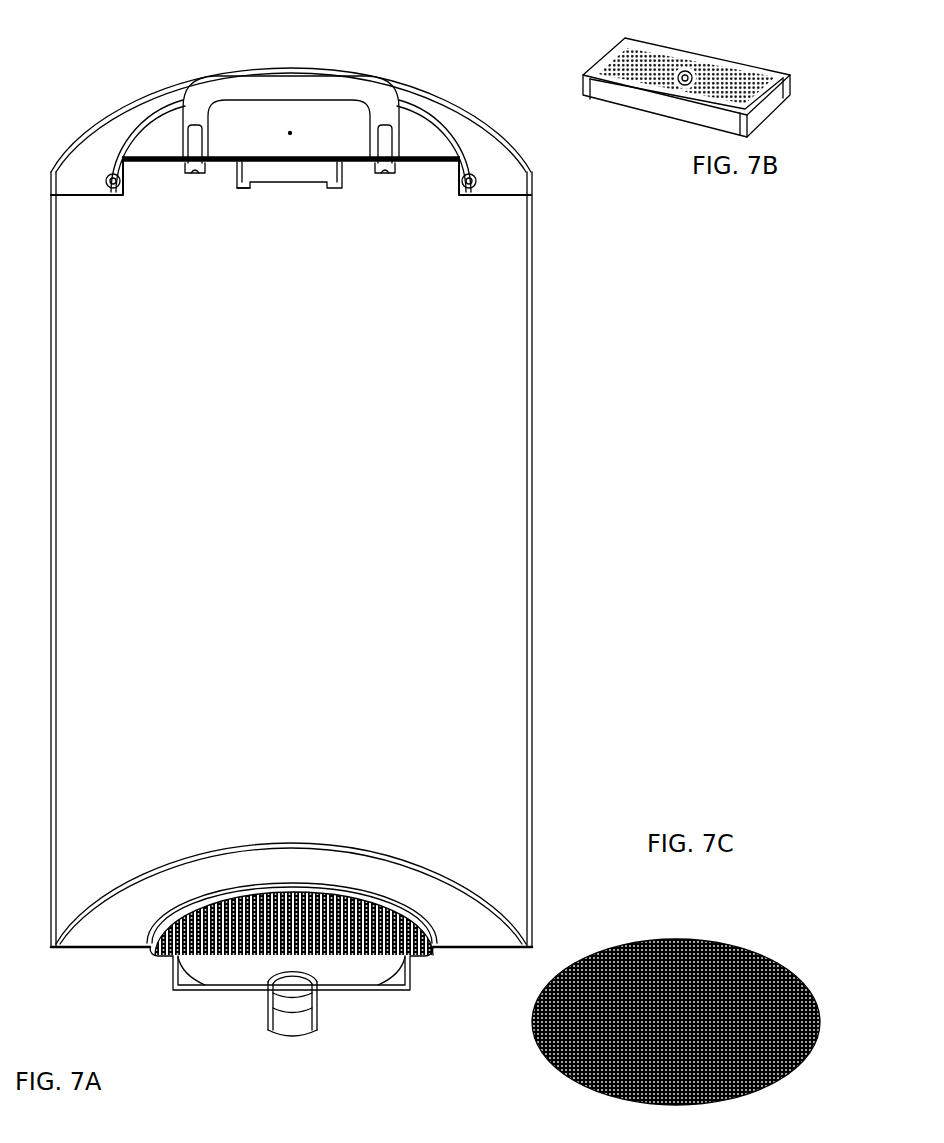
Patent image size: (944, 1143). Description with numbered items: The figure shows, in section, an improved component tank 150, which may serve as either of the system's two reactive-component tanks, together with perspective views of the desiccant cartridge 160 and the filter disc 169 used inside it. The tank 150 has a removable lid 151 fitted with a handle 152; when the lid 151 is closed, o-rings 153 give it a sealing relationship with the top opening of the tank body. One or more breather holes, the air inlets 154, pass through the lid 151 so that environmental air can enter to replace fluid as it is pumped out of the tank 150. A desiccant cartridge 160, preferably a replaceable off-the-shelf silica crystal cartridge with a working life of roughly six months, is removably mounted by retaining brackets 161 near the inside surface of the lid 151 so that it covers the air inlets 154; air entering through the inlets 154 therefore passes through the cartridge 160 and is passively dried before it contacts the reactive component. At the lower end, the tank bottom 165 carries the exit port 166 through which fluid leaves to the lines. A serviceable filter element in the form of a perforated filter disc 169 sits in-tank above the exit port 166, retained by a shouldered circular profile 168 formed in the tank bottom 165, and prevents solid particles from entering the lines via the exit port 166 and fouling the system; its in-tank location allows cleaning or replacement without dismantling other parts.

In FIG. 7A, the component tank 150 is at (532, 470).
In FIG. 7A, the tank lid 151 is at (420, 132).
In FIG. 7A, the handle 152 is at (362, 88).
In FIG. 7A, the o-rings 153 is at (530, 180).
In FIG. 7A, the air inlets 154 is at (289, 124).
In FIG. 7A, the desiccant cartridge 160 is at (290, 174).
In FIG. 7B, the desiccant cartridge 160 is at (717, 57).
In FIG. 7A, the retaining brackets 161 is at (237, 189).
In FIG. 7A, the tank bottom 165 is at (90, 949).
In FIG. 7A, the exit port 166 is at (288, 1030).
In FIG. 7A, the shouldered circular profile 168 is at (177, 988).
In FIG. 7A, the filter disc 169 is at (417, 958).
In FIG. 7C, the filter disc 169 is at (703, 940).